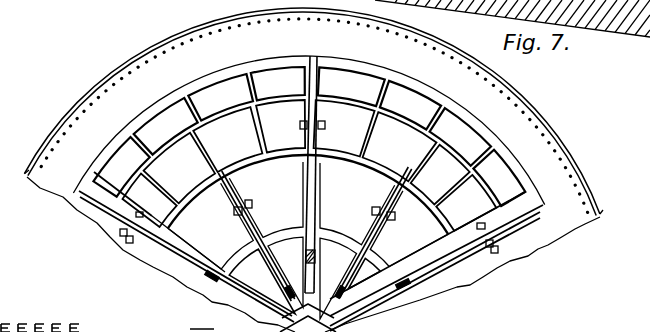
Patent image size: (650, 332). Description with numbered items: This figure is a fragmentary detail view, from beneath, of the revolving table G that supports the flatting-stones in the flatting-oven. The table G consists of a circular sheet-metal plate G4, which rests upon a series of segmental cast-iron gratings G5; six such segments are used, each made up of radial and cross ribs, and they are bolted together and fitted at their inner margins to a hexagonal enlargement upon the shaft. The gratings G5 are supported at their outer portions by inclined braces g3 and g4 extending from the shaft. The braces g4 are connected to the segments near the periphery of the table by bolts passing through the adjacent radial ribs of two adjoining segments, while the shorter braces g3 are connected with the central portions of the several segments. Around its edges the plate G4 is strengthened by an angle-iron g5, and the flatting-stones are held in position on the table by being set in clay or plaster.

The angle-iron g5 is at (96, 91).
The table G is at (308, 194).
The segmental cast-iron grating G5 is at (200, 138).
The circular sheet-metal plate G4 is at (266, 199).
The inclined brace g4 is at (318, 190).
The inclined brace g3 is at (266, 247).